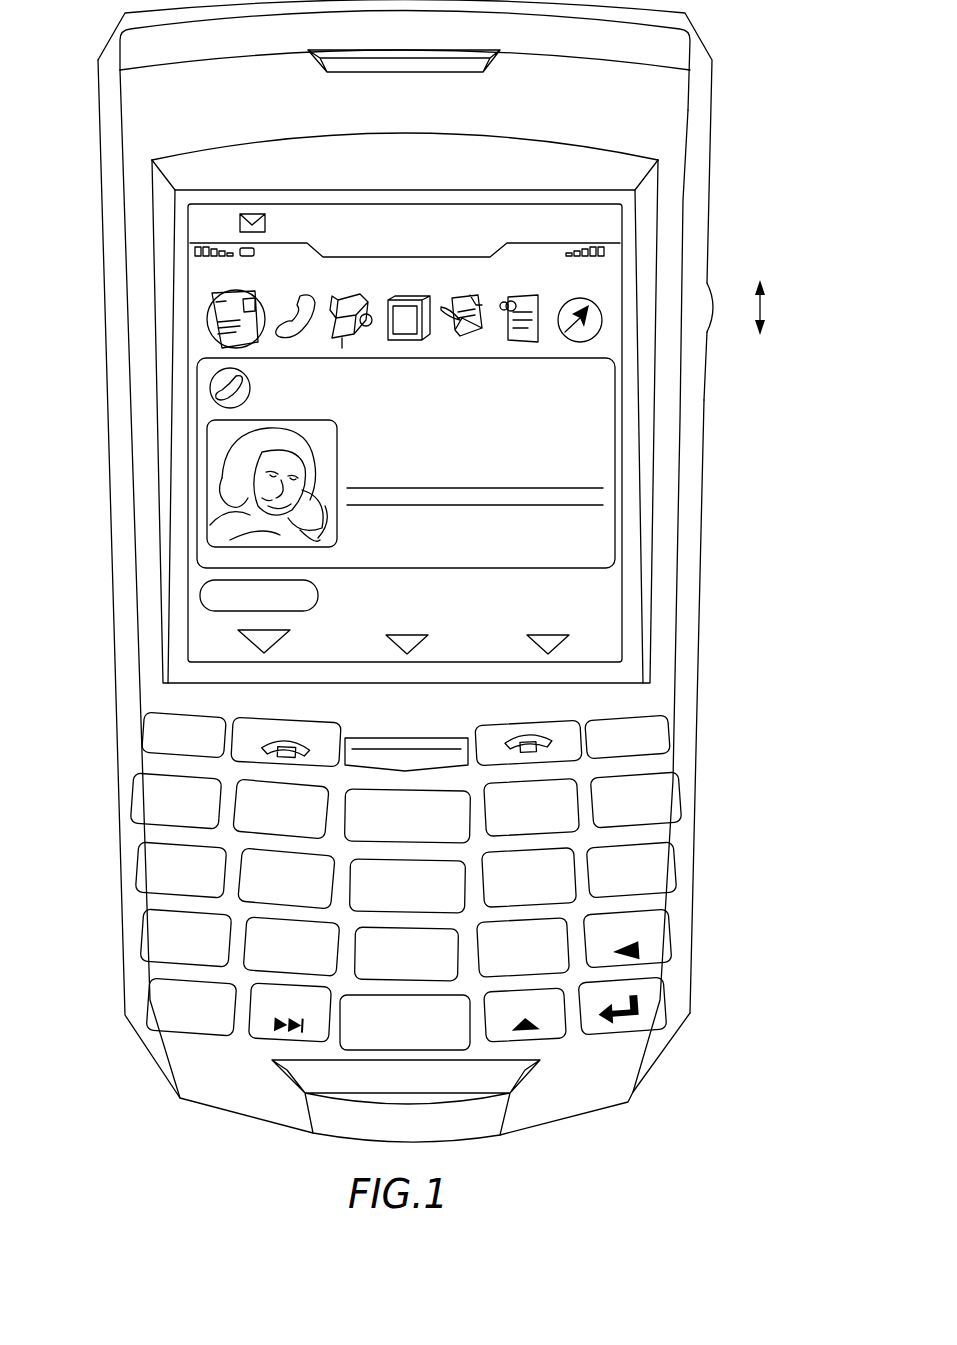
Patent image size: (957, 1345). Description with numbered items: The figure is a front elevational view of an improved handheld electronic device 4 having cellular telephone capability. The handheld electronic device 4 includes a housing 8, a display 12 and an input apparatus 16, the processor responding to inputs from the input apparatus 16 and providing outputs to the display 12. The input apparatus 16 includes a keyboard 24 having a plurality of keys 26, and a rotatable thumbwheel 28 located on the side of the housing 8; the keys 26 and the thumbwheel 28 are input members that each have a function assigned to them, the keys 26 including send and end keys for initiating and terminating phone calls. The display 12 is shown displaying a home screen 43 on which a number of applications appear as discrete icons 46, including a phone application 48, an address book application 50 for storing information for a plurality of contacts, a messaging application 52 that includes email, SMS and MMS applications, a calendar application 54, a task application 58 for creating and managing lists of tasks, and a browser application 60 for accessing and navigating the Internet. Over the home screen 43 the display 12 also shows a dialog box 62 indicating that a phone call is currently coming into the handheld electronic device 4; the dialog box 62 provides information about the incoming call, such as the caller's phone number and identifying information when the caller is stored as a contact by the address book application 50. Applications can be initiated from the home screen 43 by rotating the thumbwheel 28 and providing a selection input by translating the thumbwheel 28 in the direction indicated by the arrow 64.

The handheld electronic device 4 is at (85, 82).
The housing 8 is at (692, 366).
The display 12 is at (590, 204).
The input apparatus 16 is at (693, 772).
The keyboard 24 is at (688, 822).
The keys 26 is at (273, 725).
The rotatable thumbwheel 28 is at (714, 302).
The home screen 43 is at (613, 266).
The icons 46 is at (330, 292).
The phone application 48 is at (290, 335).
The address book application 50 is at (379, 312).
The messaging application 52 is at (212, 300).
The calendar application 54 is at (412, 340).
The task application 58 is at (482, 306).
The browser application 60 is at (600, 305).
The dialog box 62 is at (617, 447).
The arrow 64 is at (790, 306).